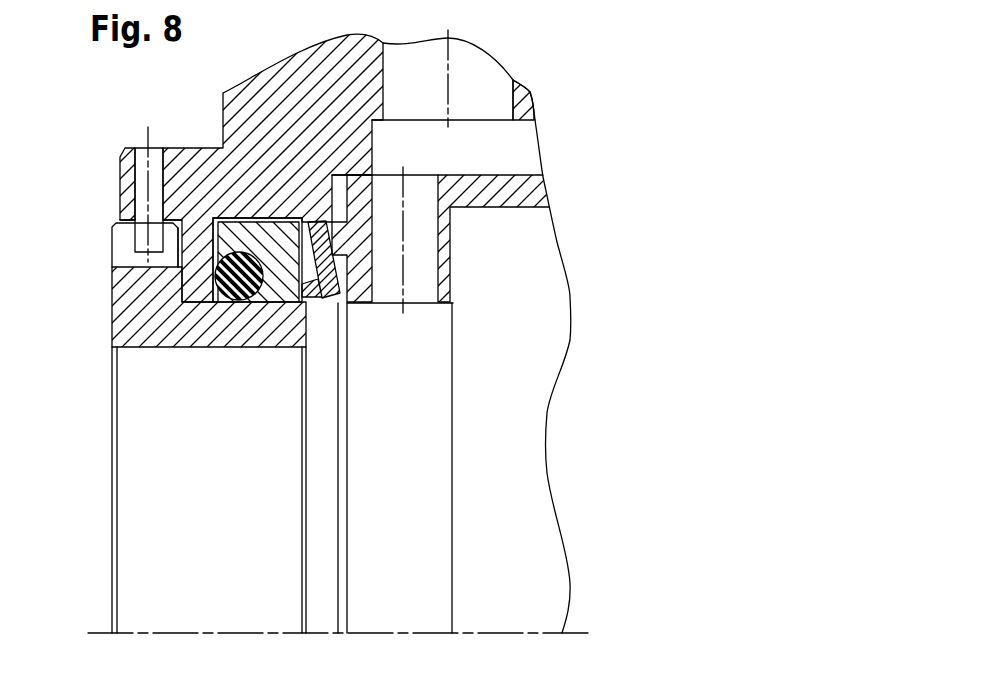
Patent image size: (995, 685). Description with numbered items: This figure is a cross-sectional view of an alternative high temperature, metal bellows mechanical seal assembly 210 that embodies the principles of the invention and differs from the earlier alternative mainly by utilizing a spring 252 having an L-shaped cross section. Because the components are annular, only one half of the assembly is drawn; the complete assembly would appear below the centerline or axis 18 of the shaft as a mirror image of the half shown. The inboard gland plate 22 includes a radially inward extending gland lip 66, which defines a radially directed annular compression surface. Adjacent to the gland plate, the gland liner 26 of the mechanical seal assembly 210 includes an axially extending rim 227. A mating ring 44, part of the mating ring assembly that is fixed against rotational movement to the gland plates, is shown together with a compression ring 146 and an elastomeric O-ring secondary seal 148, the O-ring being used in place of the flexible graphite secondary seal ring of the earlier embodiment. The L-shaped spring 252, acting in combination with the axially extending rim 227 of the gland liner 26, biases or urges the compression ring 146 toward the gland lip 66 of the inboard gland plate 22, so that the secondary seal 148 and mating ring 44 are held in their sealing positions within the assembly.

The mechanical seal assembly 210 is at (490, 48).
The inboard gland plate 22 is at (123, 170).
The compression ring 146 is at (238, 245).
The elastomeric O-ring secondary seal 148 is at (240, 255).
The mating ring 44 is at (143, 301).
The gland lip 66 is at (195, 293).
The axially extending rim 227 is at (338, 238).
The gland liner 26 is at (450, 257).
The L-shaped spring 252 is at (323, 287).
The centerline or axis 18 is at (582, 633).